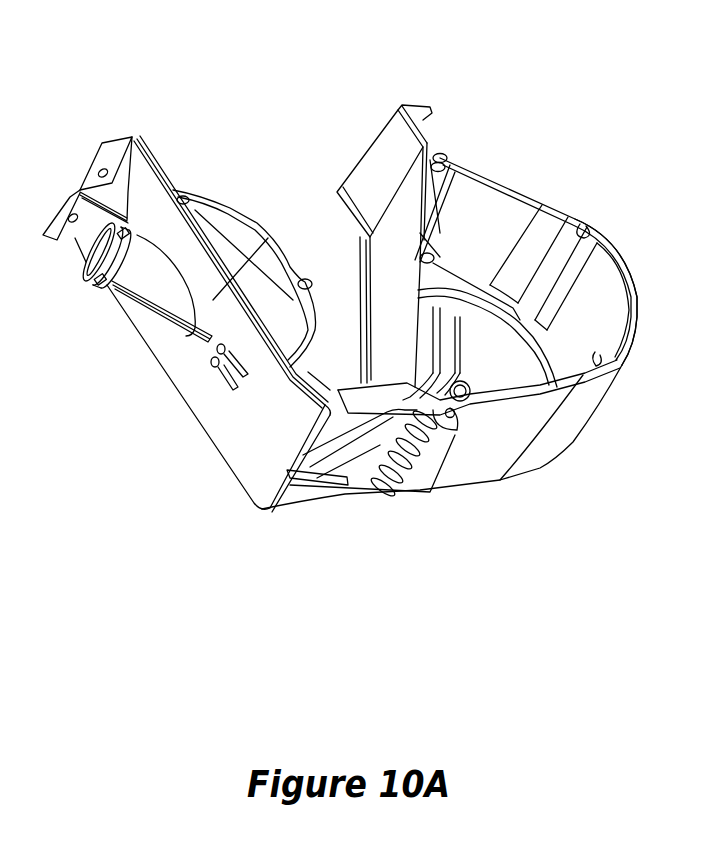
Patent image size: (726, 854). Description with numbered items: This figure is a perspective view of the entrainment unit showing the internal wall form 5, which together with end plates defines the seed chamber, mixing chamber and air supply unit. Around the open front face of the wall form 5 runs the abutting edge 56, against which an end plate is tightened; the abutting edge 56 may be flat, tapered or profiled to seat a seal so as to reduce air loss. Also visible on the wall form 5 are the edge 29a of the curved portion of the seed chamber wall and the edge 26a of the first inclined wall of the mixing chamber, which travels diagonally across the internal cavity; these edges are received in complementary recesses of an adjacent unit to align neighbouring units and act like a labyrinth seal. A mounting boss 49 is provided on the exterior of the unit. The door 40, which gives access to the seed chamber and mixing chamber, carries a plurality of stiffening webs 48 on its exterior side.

The internal wall form 5 is at (340, 324).
The edge of the first inclined wall 26a is at (402, 110).
The edge of the curved portion 29a is at (233, 207).
The abutting edge 56 is at (640, 357).
The mounting boss 49 is at (215, 380).
The door 40 is at (358, 468).
The stiffening web 48 is at (387, 492).